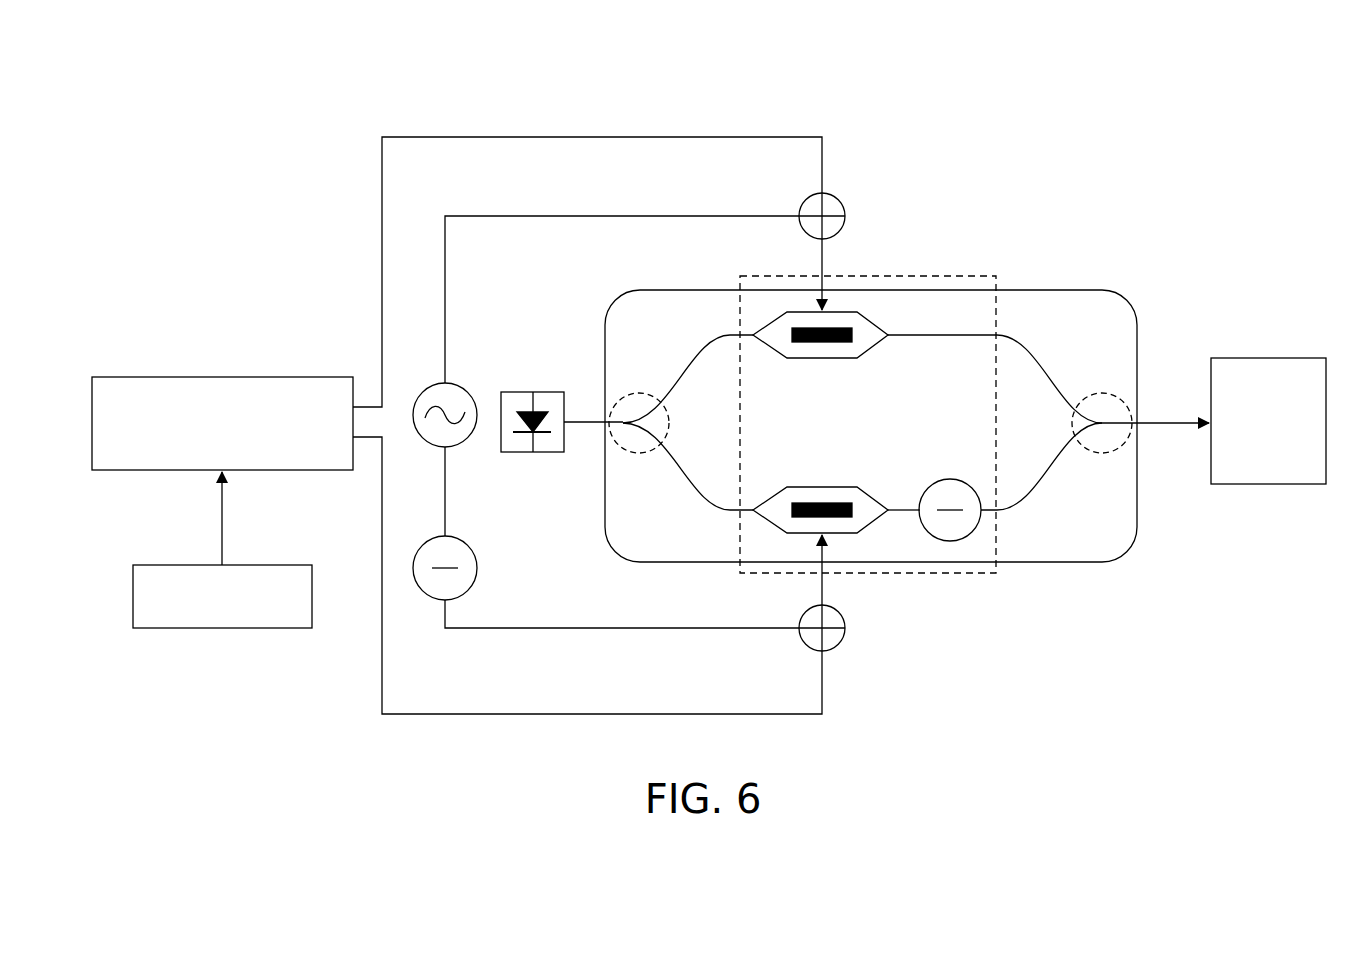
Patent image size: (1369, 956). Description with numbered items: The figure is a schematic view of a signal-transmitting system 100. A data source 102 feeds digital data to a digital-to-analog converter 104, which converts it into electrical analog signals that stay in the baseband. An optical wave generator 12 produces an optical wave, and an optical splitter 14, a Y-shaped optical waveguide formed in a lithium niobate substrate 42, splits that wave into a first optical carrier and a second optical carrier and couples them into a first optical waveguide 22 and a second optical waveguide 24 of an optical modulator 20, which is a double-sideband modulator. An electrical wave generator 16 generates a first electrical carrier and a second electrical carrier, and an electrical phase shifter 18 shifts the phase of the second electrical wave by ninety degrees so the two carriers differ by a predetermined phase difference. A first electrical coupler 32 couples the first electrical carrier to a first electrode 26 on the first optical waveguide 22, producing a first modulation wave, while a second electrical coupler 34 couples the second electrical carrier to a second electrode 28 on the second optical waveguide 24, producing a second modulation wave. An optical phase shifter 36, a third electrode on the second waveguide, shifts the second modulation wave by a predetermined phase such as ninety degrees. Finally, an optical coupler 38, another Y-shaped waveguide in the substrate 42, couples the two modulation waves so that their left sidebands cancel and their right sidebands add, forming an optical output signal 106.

The signal-transmitting system 100 is at (229, 109).
The data source 102 is at (222, 628).
The digital-to-analog converter 104 is at (222, 377).
The optical output signal 106 is at (1270, 358).
The optical wave generator 12 is at (549, 392).
The optical splitter 14 is at (616, 450).
The electrical wave generator 16 is at (466, 390).
The electrical phase shifter 18 is at (477, 568).
The optical modulator 20 is at (910, 276).
The first optical waveguide 22 is at (953, 335).
The second optical waveguide 24 is at (907, 512).
The first electrode 26 is at (767, 322).
The second electrode 28 is at (767, 524).
The first electrical coupler 32 is at (842, 198).
The second electrical coupler 34 is at (838, 641).
The optical phase shifter 36 is at (952, 541).
The optical coupler 38 is at (1118, 450).
The lithium niobate substrate 42 is at (1114, 312).